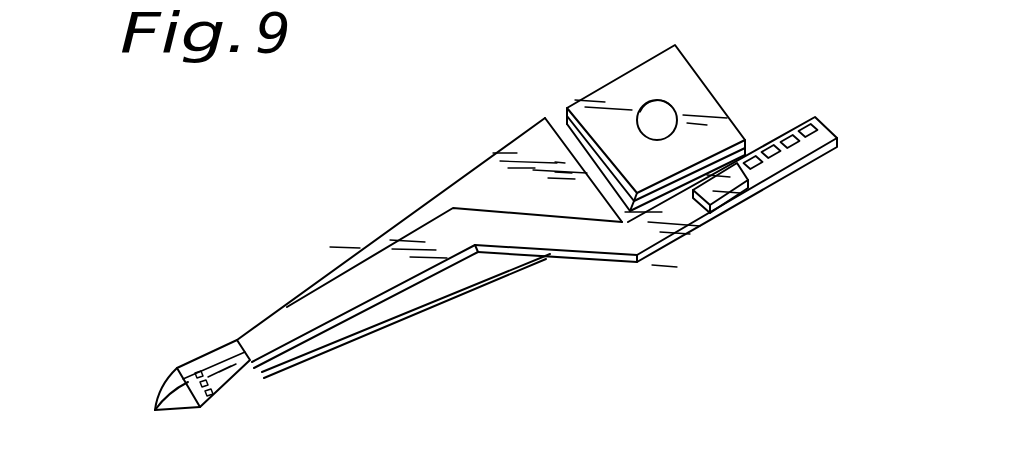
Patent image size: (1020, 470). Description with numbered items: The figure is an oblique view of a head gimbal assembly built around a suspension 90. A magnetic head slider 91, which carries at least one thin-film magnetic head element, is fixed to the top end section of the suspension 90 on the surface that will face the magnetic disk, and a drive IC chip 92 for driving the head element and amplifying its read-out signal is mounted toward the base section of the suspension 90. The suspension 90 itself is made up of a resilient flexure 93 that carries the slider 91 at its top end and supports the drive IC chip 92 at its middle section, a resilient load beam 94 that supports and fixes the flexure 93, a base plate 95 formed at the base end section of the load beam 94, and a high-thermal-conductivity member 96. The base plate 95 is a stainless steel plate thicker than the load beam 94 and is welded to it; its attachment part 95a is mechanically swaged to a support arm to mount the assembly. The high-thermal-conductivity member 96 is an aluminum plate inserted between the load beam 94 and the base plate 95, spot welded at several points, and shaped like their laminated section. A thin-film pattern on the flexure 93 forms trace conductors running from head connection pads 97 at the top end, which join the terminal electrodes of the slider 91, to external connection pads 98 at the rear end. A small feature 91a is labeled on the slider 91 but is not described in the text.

The suspension 90 is at (428, 102).
The magnetic head slider 91 is at (238, 383).
The slider element portion 91a is at (213, 376).
The drive IC chip 92 is at (724, 200).
The flexure 93 is at (288, 320).
The load beam 94 is at (500, 165).
The base plate 95 is at (690, 108).
The attachment part 95a is at (642, 106).
The high-thermal-conductivity member 96 is at (777, 185).
The head connection pads 97 is at (156, 407).
The external connection pads 98 is at (757, 153).